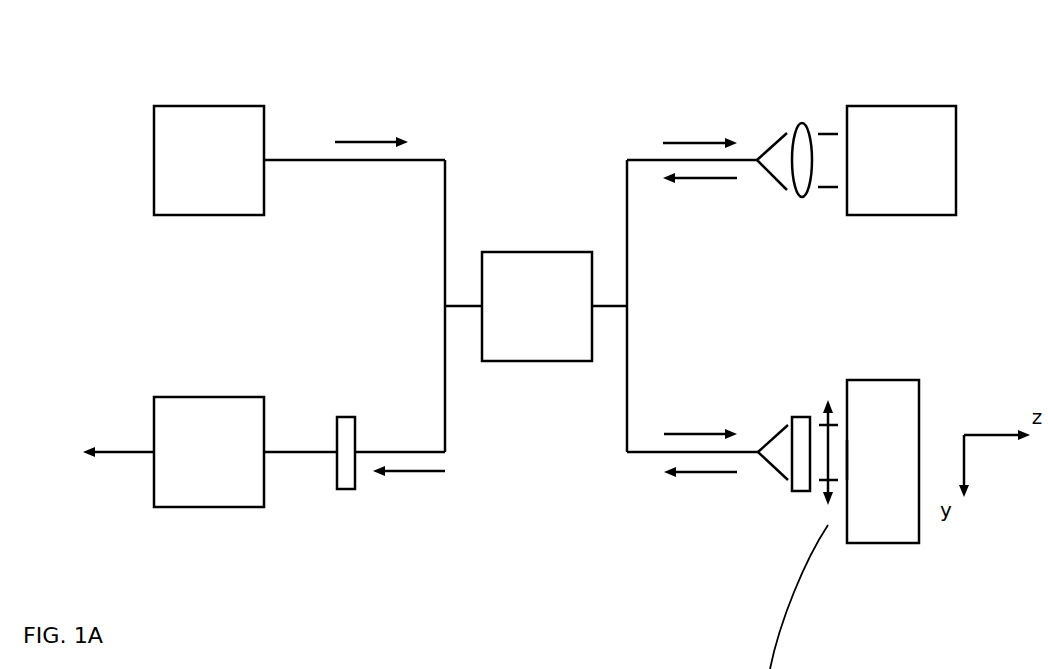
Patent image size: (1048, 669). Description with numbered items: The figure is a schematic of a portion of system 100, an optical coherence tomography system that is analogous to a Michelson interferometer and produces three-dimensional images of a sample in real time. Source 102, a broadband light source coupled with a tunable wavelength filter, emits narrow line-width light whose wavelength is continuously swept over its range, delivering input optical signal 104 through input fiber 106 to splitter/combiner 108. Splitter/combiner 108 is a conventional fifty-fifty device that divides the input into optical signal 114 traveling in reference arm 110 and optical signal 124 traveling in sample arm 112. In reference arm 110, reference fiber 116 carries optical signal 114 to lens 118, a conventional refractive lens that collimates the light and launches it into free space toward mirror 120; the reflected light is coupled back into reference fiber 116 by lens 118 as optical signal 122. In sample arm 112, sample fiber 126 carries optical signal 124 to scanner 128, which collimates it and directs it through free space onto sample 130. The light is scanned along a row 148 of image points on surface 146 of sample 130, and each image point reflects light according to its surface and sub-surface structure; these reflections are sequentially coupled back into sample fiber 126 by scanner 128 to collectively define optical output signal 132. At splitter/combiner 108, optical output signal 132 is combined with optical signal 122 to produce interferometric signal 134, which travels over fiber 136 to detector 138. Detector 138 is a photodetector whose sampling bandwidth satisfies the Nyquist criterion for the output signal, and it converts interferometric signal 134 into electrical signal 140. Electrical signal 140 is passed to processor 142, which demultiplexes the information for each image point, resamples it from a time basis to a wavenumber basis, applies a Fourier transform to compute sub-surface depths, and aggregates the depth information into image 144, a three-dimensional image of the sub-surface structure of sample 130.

The system 100 is at (114, 74).
The source 102 is at (208, 106).
The input optical signal 104 is at (358, 142).
The input fiber 106 is at (443, 252).
The splitter/combiner 108 is at (538, 252).
The reference arm 110 is at (609, 80).
The sample arm 112 is at (608, 553).
The optical signal 114 is at (693, 143).
The reference fiber 116 is at (627, 178).
The lens 118 is at (802, 123).
The mirror 120 is at (901, 106).
The optical signal 122 is at (709, 178).
The optical signal 124 is at (693, 434).
The sample fiber 126 is at (627, 433).
The scanner 128 is at (800, 491).
The sample 130 is at (883, 380).
The optical output signal 132 is at (709, 472).
The interferometric signal 134 is at (417, 472).
The detection fiber 136 is at (443, 326).
The detector 138 is at (345, 417).
The electrical signal 140 is at (280, 452).
The processor 142 is at (208, 509).
The image 144 is at (128, 453).
The surface 146 is at (847, 458).
The row 148 is at (709, 597).